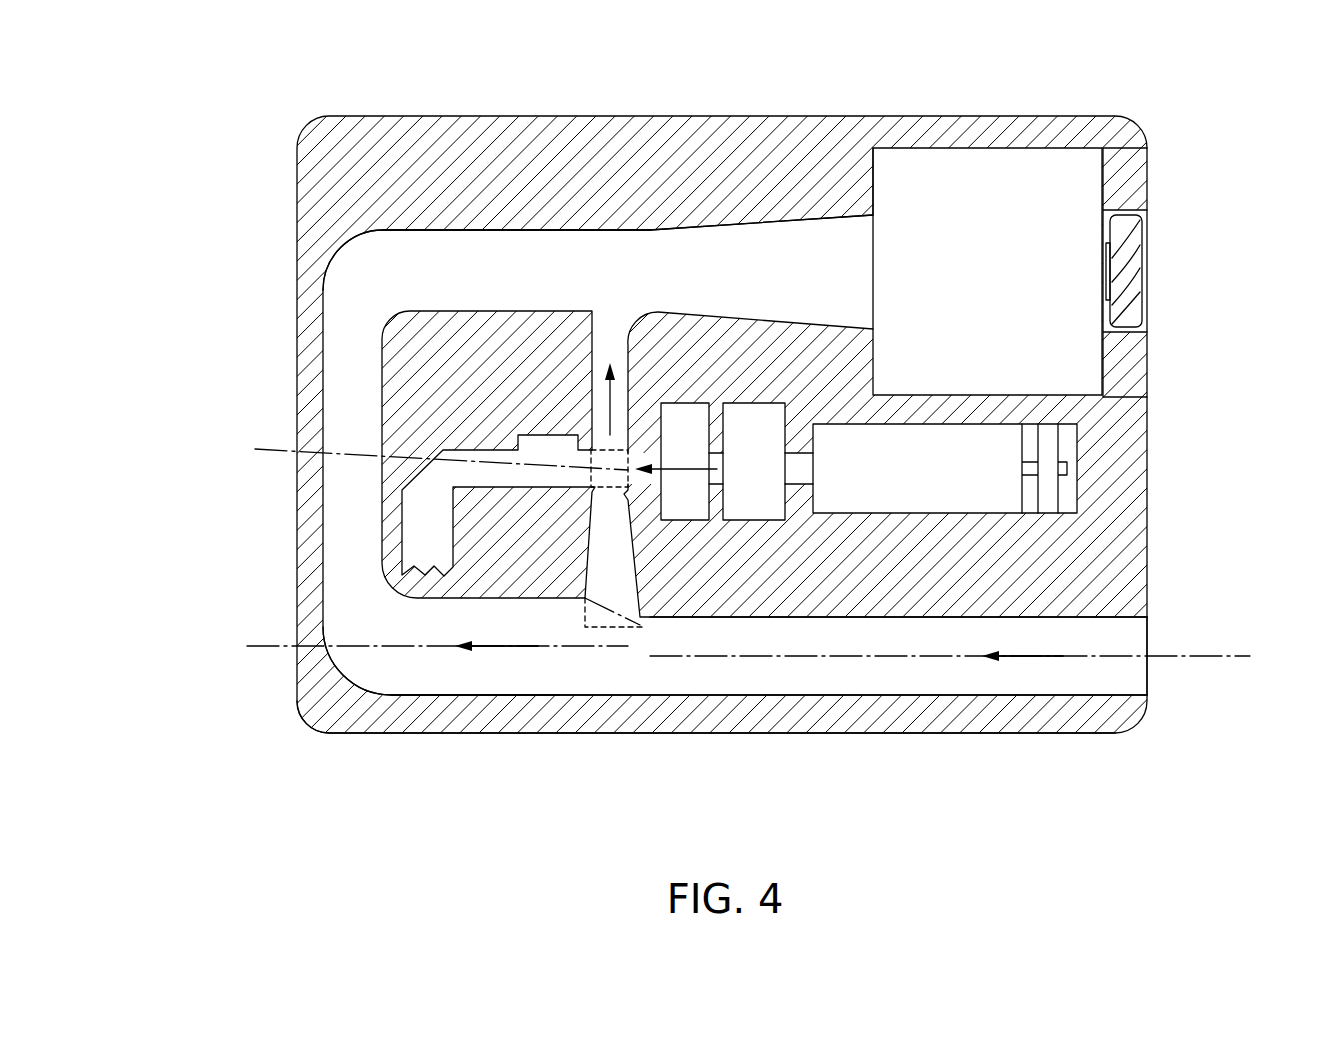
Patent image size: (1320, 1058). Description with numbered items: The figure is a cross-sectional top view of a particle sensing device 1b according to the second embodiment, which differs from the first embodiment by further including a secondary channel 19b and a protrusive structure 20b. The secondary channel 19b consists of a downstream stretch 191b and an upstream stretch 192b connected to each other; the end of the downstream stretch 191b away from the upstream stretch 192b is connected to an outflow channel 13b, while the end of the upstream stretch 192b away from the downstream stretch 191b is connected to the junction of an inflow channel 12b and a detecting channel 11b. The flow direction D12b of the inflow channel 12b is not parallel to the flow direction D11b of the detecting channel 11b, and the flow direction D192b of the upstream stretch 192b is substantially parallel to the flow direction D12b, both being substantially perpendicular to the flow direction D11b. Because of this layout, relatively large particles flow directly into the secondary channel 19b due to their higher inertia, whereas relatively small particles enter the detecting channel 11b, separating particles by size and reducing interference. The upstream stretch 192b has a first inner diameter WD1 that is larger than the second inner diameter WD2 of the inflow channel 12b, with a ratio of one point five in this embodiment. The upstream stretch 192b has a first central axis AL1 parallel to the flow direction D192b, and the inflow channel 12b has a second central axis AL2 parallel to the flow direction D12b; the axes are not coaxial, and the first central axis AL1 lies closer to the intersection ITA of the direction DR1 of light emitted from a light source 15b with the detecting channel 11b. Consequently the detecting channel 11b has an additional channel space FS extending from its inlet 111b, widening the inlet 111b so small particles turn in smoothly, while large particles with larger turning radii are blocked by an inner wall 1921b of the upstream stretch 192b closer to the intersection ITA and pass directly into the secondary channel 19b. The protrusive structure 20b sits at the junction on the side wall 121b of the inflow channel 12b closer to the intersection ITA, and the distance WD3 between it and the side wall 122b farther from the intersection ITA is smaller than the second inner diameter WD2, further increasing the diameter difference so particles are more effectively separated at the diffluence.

The particle sensing device 1b is at (271, 57).
The outflow channel 13b is at (753, 257).
The flow direction of the detecting channel D11b is at (611, 362).
The direction of the light emitted from the light source DR1 is at (686, 470).
The downstream stretch 191b is at (488, 287).
The secondary channel 19b is at (98, 305).
The upstream stretch 192b is at (463, 670).
The intersection ITA is at (418, 453).
The detecting channel 11b is at (612, 540).
The inner wall 1921b is at (461, 600).
The first central axis AL1 is at (411, 646).
The light source 15b is at (952, 468).
The flow direction of the inflow channel D12b is at (1040, 653).
The second central axis AL2 is at (975, 656).
The flow direction of the upstream stretch D192b is at (500, 648).
The additional channel space FS is at (598, 613).
The protrusive structure 20b is at (644, 620).
The inlet of the detecting channel 111b is at (598, 627).
The side wall of the inflow channel 121b is at (788, 620).
The inflow channel 12b is at (948, 670).
The side wall of the inflow channel 122b is at (1073, 682).
The first inner diameter WD1 is at (554, 600).
The second inner diameter WD2 is at (900, 617).
The distance WD3 is at (643, 627).